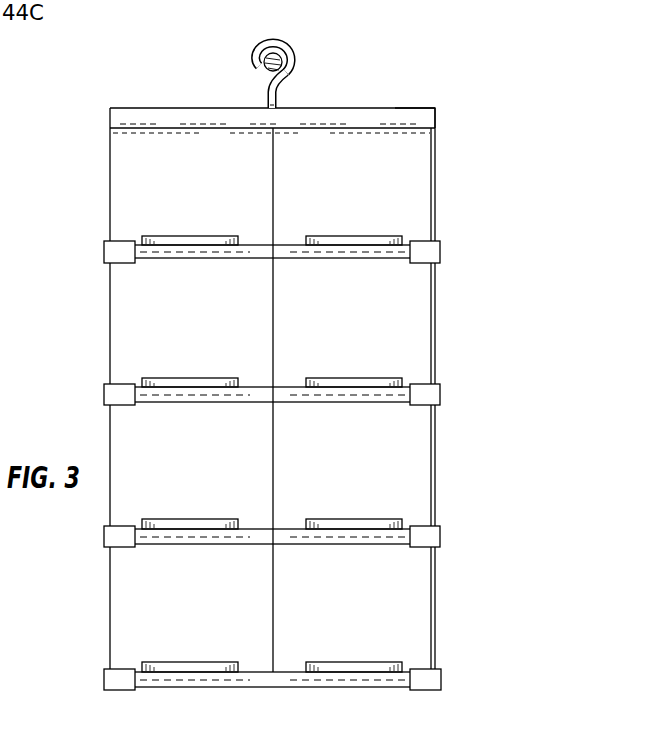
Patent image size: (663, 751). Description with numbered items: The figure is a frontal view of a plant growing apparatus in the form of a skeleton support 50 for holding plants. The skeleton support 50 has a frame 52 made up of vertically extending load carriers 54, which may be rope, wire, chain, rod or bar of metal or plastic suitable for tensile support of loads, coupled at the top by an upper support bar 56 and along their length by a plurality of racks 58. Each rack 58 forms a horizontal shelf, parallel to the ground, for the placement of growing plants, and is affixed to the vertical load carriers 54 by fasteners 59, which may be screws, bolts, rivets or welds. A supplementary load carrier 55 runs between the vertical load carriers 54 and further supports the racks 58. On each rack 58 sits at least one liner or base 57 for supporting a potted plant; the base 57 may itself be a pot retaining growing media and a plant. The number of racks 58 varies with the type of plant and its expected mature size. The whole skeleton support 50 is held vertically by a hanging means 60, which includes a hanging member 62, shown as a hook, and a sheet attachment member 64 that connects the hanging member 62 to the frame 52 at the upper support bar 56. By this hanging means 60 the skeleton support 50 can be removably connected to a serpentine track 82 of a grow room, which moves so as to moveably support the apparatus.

The skeleton support 50 is at (386, 52).
The frame 52 is at (110, 327).
The vertically extending load carriers 54 is at (437, 182).
The supplementary load carrier 55 is at (273, 630).
The upper support bar 56 is at (118, 118).
The liner or base 57 is at (192, 662).
The racks 58 is at (408, 385).
The fasteners 59 is at (437, 525).
The hanging means 60 is at (280, 103).
The hanging member 62 is at (286, 44).
The sheet attachment member 64 is at (413, 107).
The serpentine track 82 is at (268, 52).